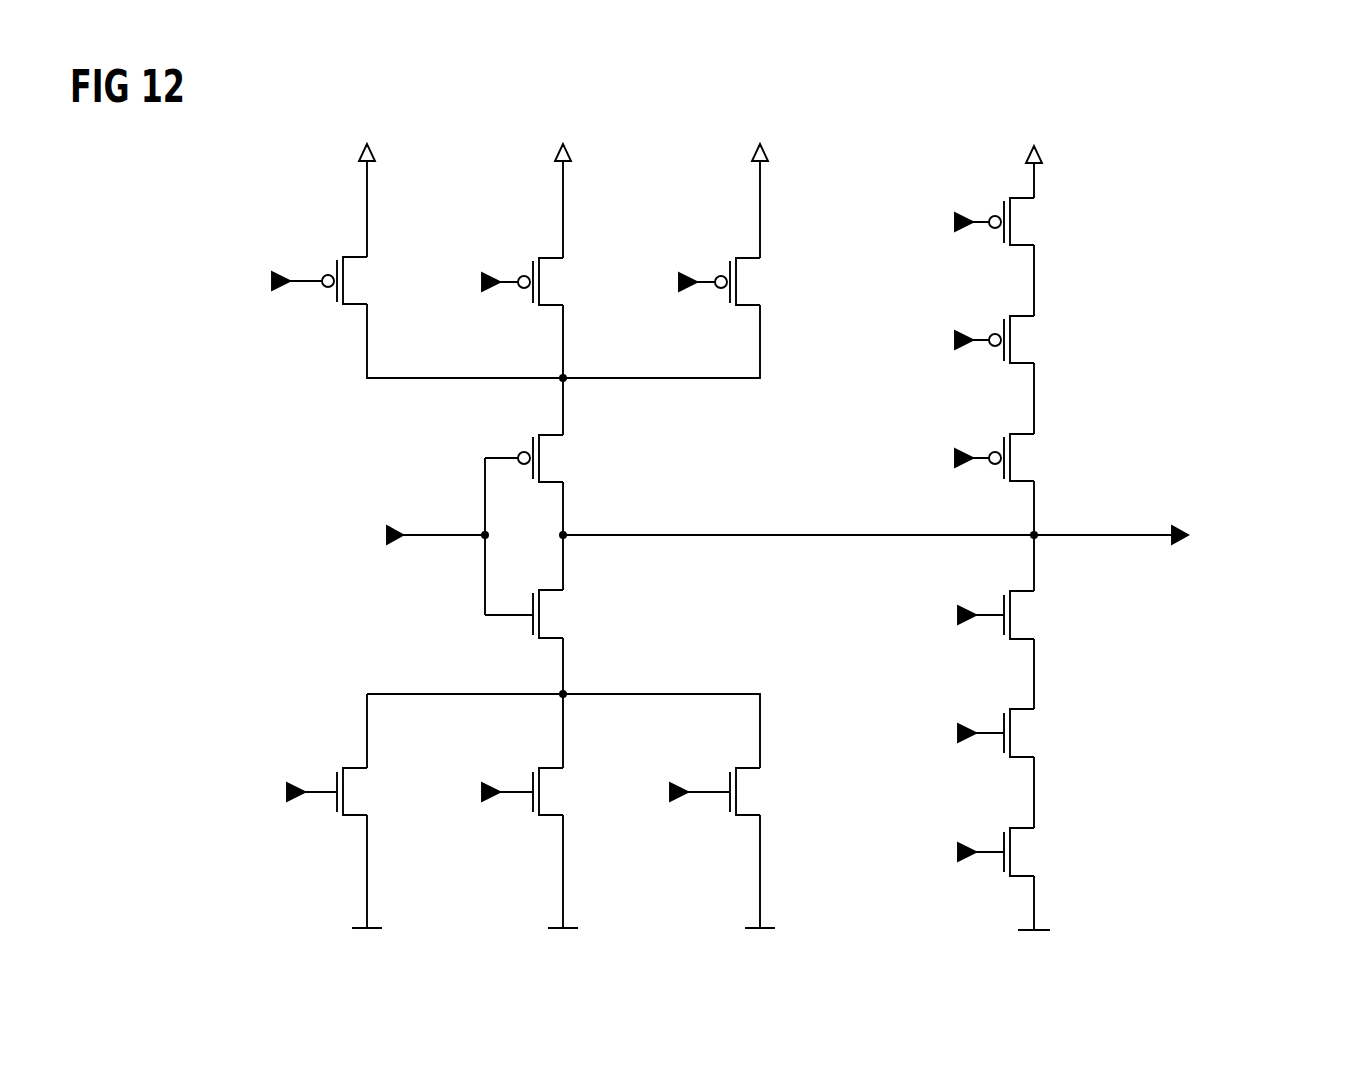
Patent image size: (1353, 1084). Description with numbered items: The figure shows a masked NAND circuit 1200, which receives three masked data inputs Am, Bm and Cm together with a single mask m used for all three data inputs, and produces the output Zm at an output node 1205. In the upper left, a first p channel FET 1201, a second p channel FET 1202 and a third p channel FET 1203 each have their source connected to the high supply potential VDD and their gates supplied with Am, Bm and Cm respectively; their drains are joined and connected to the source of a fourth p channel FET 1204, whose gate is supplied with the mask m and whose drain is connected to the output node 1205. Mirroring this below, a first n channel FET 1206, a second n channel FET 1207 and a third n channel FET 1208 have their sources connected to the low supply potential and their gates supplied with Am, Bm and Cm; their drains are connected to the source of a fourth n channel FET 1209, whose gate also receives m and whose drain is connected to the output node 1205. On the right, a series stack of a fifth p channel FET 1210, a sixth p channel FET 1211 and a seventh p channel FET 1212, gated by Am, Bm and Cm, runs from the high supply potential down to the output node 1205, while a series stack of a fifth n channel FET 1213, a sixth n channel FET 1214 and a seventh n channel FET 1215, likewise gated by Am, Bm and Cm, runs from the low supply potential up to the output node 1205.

The masked NAND circuit 1200 is at (1233, 127).
The first p channel FET 1201 is at (338, 254).
The second p channel FET 1202 is at (543, 254).
The third p channel FET 1203 is at (738, 254).
The fourth p channel FET 1204 is at (537, 436).
The output node 1205 is at (707, 535).
The first n channel FET 1206 is at (347, 768).
The second n channel FET 1207 is at (543, 768).
The third n channel FET 1208 is at (743, 768).
The fourth n channel FET 1209 is at (532, 588).
The fifth p channel FET 1210 is at (1003, 193).
The sixth p channel FET 1211 is at (1006, 311).
The seventh p channel FET 1212 is at (1008, 428).
The fifth n channel FET 1213 is at (1008, 827).
The sixth n channel FET 1214 is at (1011, 709).
The seventh n channel FET 1215 is at (1007, 591).